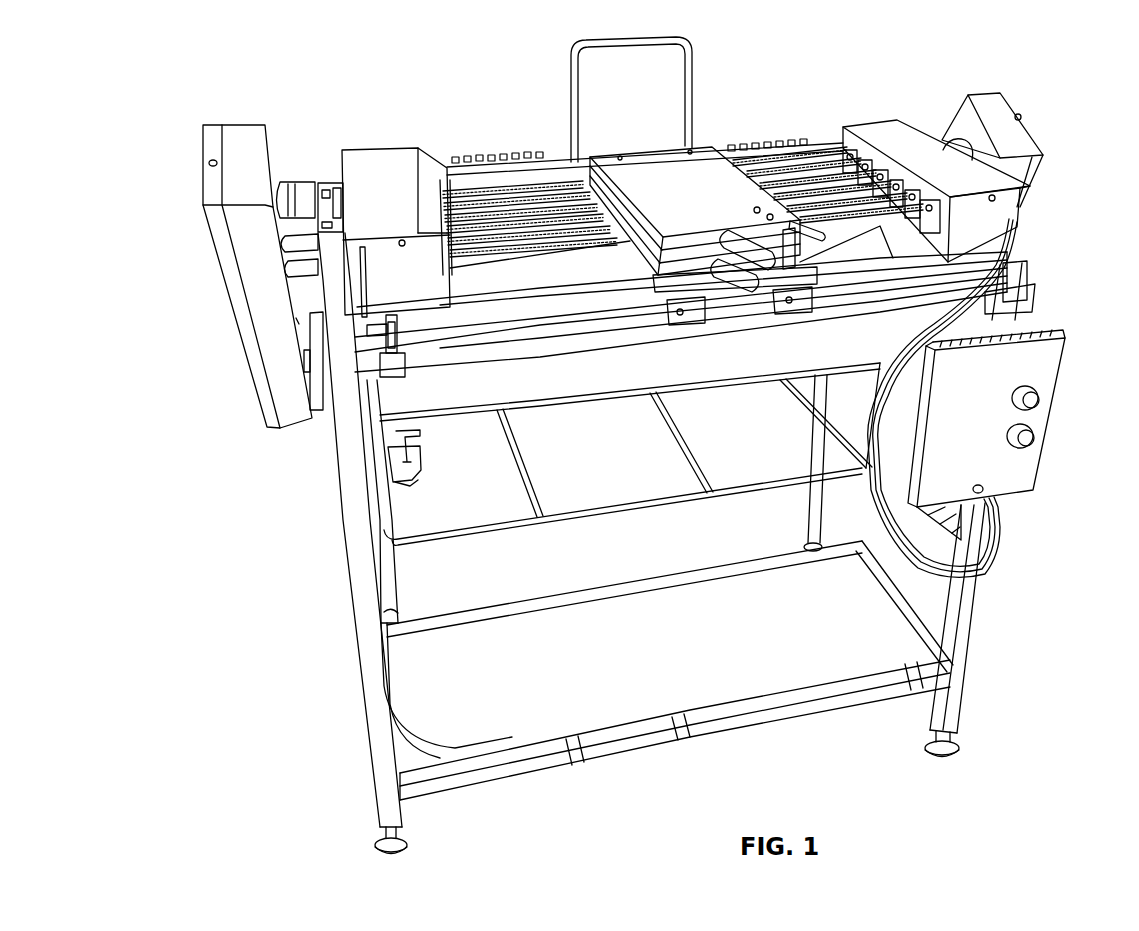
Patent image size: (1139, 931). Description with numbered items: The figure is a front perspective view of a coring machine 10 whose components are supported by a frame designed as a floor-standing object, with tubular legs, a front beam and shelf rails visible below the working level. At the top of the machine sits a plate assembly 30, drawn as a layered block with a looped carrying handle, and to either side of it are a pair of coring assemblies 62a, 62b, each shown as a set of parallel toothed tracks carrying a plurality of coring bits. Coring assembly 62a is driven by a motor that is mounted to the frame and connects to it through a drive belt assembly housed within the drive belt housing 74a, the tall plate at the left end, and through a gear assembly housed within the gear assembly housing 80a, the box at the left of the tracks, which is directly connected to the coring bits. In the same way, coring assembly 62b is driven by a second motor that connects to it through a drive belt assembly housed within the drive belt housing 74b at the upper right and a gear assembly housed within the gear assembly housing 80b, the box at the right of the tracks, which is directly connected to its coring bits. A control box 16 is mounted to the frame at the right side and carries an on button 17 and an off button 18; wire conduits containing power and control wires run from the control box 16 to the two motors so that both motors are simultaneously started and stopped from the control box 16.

The coring machine 10 is at (1049, 79).
The control box 16 is at (1052, 352).
The on button 17 is at (1040, 405).
The off button 18 is at (1036, 442).
The plate assembly 30 is at (651, 144).
The coring assembly 62a is at (478, 146).
The coring assembly 62b is at (771, 140).
The drive belt housing 74a is at (213, 127).
The drive belt housing 74b is at (1043, 155).
The gear assembly housing 80a is at (375, 160).
The gear assembly housing 80b is at (873, 128).